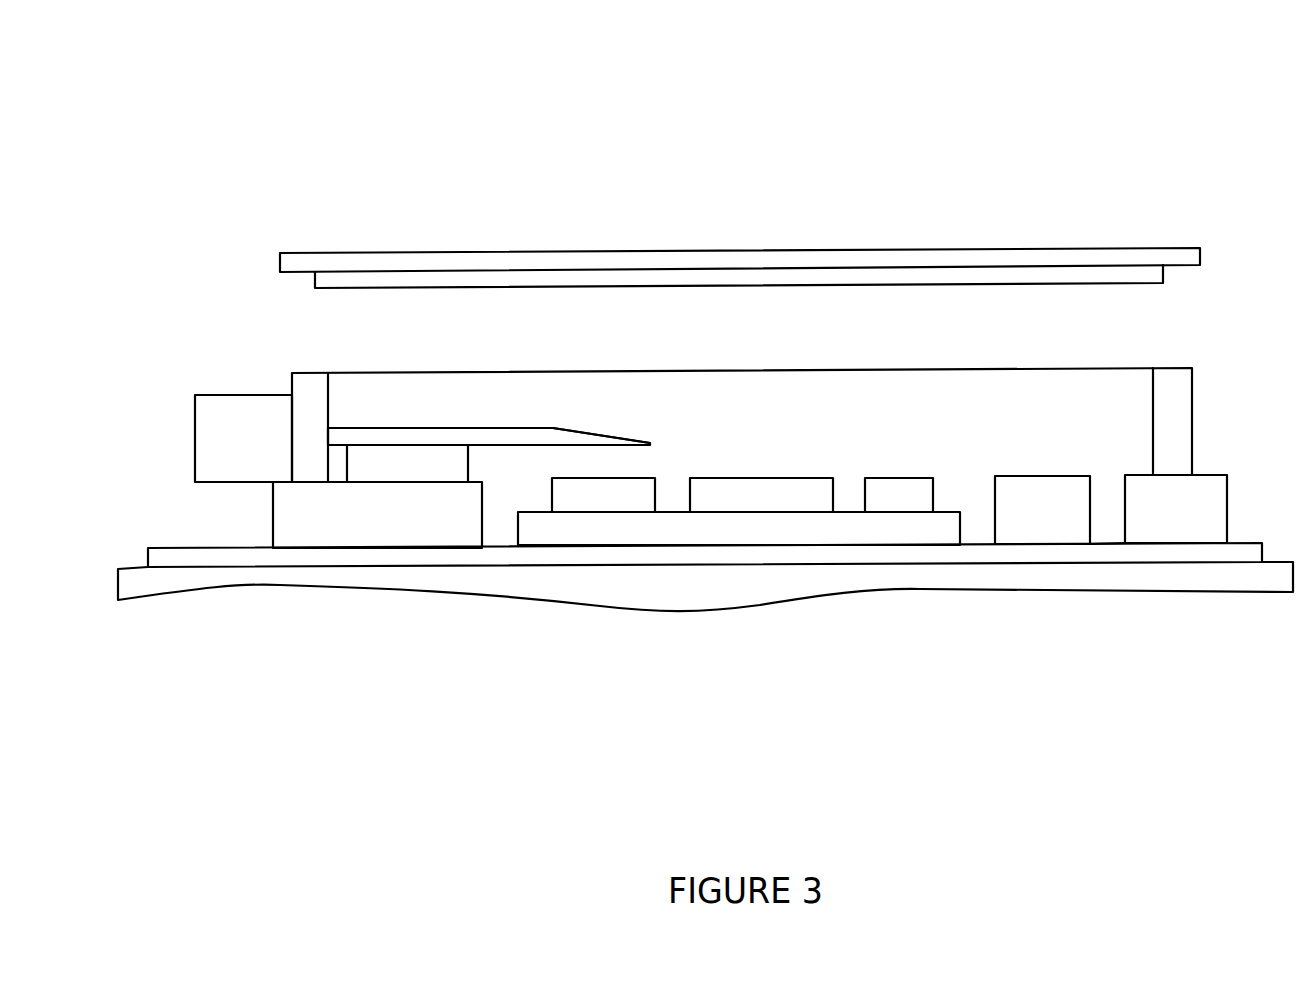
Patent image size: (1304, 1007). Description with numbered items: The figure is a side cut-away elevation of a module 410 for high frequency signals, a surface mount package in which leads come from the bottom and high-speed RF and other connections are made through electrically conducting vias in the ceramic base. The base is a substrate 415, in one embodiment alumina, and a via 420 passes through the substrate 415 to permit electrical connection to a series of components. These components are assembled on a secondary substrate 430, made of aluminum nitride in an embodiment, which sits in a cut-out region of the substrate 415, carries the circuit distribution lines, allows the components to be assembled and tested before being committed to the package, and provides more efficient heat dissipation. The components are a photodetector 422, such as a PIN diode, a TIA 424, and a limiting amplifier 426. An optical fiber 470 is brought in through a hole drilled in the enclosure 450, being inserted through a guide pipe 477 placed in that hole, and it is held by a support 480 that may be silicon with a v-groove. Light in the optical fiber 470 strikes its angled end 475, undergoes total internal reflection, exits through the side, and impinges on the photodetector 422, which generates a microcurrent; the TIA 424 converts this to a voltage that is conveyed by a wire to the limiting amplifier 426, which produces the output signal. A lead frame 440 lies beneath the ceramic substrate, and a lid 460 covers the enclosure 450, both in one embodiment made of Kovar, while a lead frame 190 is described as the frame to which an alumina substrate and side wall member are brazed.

The module 410 is at (1079, 194).
The lid 460 is at (702, 255).
The enclosure 450 is at (310, 386).
The guide pipe 477 is at (272, 448).
The optical fiber 470 is at (428, 437).
The angled end 475 is at (570, 443).
The substrate 415 is at (407, 531).
The secondary substrate 430 is at (768, 530).
The photodetector 422 is at (605, 500).
The TIA 424 is at (768, 495).
The limiting amplifier 426 is at (897, 490).
The lead frame 440 is at (877, 555).
The via 420 is at (1105, 528).
The lead frame 190 is at (150, 585).
The support 480 is at (435, 458).